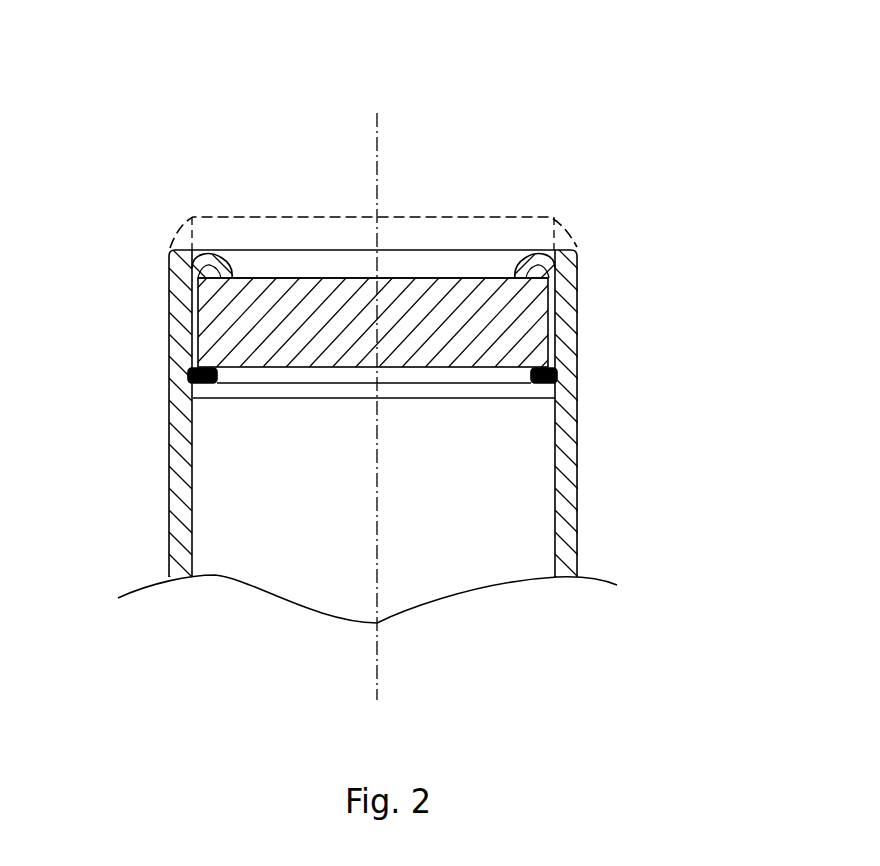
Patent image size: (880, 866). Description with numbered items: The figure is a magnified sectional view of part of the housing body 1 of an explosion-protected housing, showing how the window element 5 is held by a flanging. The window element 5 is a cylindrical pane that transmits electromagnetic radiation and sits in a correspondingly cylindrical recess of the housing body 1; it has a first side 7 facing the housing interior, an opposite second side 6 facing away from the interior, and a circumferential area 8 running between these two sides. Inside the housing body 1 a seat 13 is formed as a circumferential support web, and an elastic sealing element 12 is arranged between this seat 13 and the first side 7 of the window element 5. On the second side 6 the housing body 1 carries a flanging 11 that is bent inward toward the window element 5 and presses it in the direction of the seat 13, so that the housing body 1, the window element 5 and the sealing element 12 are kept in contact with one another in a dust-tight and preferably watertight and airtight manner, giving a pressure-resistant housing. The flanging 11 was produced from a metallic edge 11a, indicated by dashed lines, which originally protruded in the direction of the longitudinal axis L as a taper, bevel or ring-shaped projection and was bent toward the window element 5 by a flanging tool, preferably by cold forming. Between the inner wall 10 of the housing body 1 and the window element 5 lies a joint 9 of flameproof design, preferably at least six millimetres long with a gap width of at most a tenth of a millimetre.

The housing body 1 is at (603, 458).
The window element 5 is at (393, 310).
The second side 6 is at (275, 278).
The first side 7 is at (250, 370).
The circumferential area 8 is at (560, 305).
The joint 9 is at (188, 350).
The inner wall 10 is at (222, 262).
The flanging 11 is at (540, 265).
The metallic edge 11a is at (563, 228).
The elastic sealing element 12 is at (557, 365).
The seat 13 is at (203, 400).
The longitudinal axis L is at (378, 130).